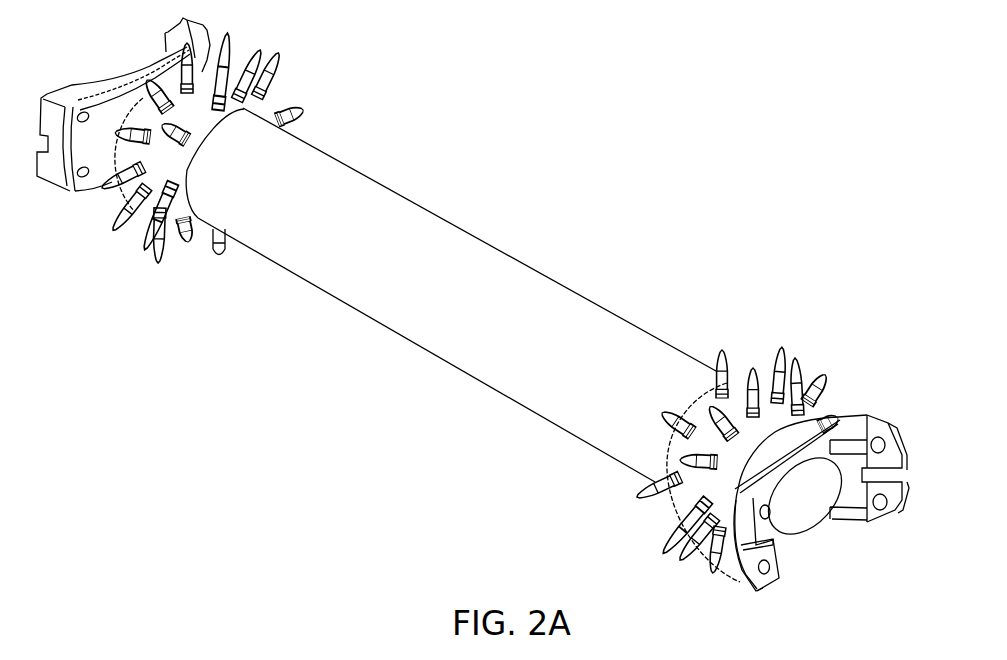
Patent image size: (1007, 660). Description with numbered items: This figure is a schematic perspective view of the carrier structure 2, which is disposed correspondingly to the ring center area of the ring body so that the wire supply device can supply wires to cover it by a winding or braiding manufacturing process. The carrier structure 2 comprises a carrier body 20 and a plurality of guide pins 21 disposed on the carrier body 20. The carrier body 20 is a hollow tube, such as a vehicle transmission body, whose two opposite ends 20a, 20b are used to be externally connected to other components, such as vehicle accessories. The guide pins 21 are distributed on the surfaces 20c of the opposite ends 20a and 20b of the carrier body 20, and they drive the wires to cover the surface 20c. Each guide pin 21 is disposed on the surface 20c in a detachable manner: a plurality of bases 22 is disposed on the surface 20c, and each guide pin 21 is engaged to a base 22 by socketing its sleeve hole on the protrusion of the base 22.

The carrier structure 2 is at (488, 298).
The carrier body 20 is at (451, 295).
The end of carrier body 20a is at (293, 52).
The end of carrier body 20b is at (865, 392).
The surface of carrier body 20c is at (447, 333).
The guide pin 21 is at (222, 72).
The base 22 is at (240, 96).